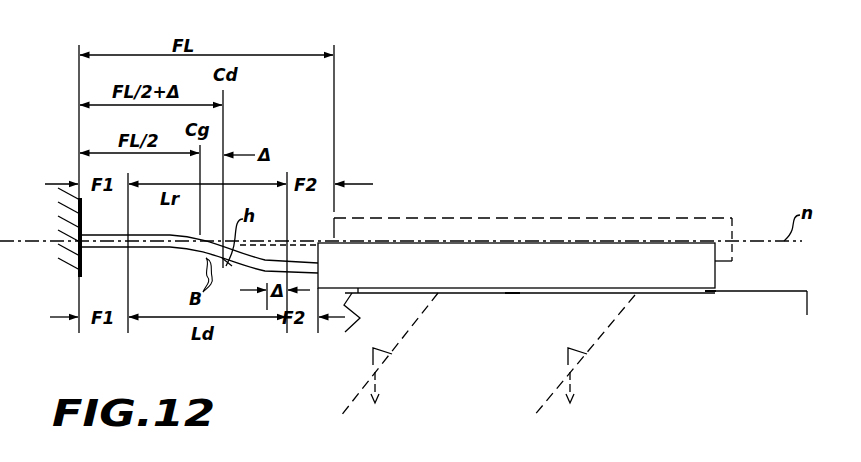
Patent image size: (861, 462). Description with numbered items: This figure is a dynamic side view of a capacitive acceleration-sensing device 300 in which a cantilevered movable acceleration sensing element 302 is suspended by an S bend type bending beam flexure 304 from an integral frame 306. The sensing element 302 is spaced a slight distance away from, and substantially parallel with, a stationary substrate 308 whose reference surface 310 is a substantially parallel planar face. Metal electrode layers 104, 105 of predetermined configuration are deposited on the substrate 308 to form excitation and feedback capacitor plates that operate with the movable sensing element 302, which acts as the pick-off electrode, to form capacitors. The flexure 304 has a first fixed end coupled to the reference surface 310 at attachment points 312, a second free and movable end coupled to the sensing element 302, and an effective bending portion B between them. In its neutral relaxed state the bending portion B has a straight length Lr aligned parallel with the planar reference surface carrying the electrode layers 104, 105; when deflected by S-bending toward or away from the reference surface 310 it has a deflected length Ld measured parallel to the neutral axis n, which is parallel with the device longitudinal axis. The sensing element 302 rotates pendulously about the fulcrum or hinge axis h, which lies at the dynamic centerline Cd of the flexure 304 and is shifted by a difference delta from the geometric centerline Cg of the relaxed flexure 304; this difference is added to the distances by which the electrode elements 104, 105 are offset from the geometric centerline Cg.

The capacitive acceleration-sensing device 300 is at (548, 168).
The cantilevered movable acceleration sensing element 302 is at (648, 218).
The S bend type bending beam flexure 304 is at (145, 248).
The integral frame 306 is at (45, 228).
The stationary substrate 308 is at (398, 325).
The reference surface 310 is at (755, 291).
The attachment point 312 is at (90, 256).
The metal electrode layer 104 is at (515, 294).
The metal electrode layer 105 is at (714, 292).